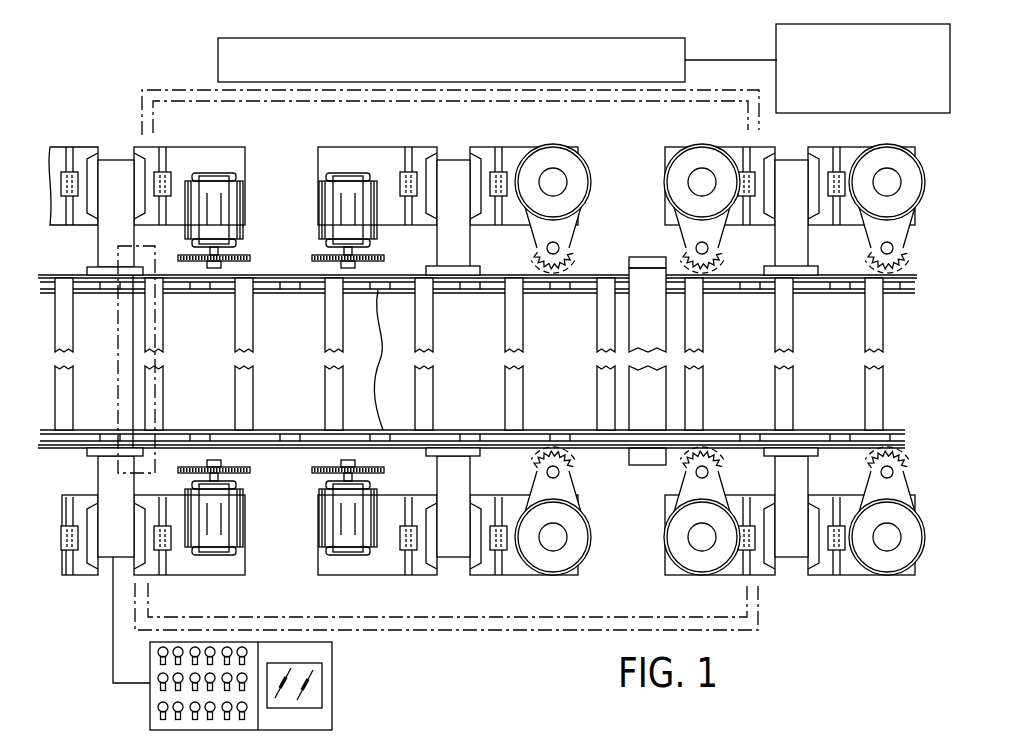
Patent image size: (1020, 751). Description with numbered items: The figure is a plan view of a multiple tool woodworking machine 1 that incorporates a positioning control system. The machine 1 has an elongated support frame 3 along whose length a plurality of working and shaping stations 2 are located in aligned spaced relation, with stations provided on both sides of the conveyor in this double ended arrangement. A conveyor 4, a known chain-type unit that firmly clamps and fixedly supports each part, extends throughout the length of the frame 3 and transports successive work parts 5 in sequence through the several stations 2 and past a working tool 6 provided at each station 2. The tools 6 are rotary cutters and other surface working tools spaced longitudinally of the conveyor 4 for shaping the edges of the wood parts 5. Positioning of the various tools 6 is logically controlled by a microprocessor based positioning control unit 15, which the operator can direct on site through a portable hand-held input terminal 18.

The woodworking machine 1 is at (135, 82).
The working and shaping stations 2 is at (313, 196).
The support frame 3 is at (97, 468).
The conveyor 4 is at (418, 342).
The work part 5 is at (160, 360).
The working tool 6 is at (303, 250).
The positioning control unit 15 is at (343, 692).
The portable hand-held input terminal 18 is at (777, 43).